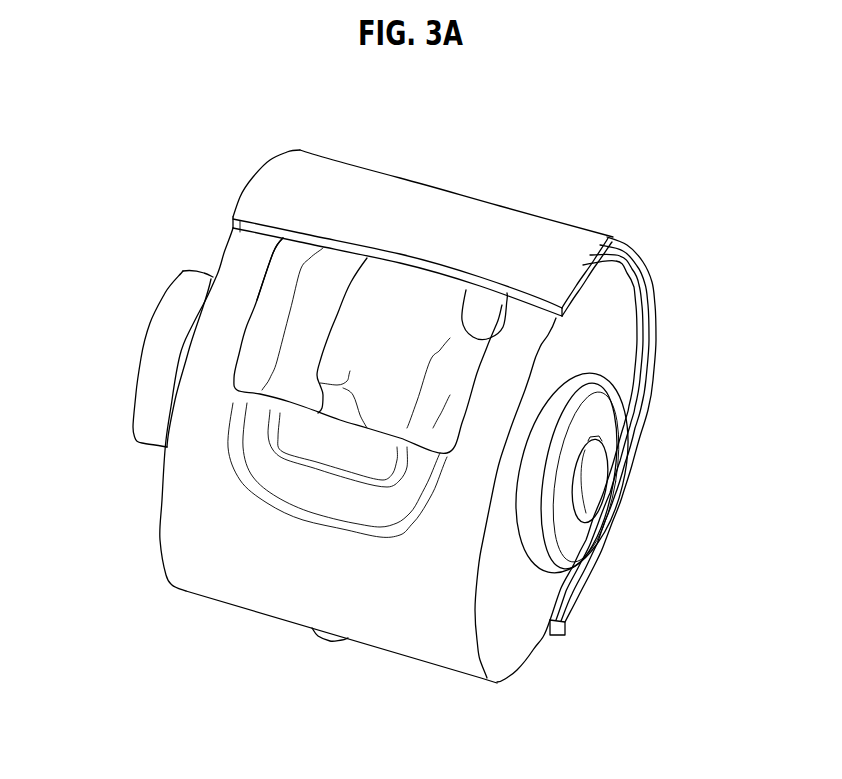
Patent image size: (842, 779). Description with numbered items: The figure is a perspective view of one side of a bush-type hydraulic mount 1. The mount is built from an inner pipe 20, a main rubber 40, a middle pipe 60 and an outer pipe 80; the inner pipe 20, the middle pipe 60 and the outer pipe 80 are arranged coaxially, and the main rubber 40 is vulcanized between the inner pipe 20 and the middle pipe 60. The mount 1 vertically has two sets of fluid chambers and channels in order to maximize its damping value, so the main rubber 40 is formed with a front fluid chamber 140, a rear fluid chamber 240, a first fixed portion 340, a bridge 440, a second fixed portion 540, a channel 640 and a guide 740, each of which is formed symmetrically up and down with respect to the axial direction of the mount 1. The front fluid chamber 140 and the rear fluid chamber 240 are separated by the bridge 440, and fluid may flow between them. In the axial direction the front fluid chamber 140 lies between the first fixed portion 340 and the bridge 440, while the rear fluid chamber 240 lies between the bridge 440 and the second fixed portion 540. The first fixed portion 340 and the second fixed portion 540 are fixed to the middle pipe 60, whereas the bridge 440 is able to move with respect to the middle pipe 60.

The bush-type hydraulic mount 1 is at (712, 156).
The inner pipe 20 is at (160, 355).
The main rubber 40 is at (187, 527).
The middle pipe 60 is at (640, 270).
The outer pipe 80 is at (478, 217).
The front fluid chamber 140 is at (318, 291).
The rear fluid chamber 240 is at (452, 347).
The first fixed portion 340 is at (257, 253).
The bridge 440 is at (375, 268).
The second fixed portion 540 is at (527, 323).
The channel 640 is at (383, 502).
The guide 740 is at (333, 448).